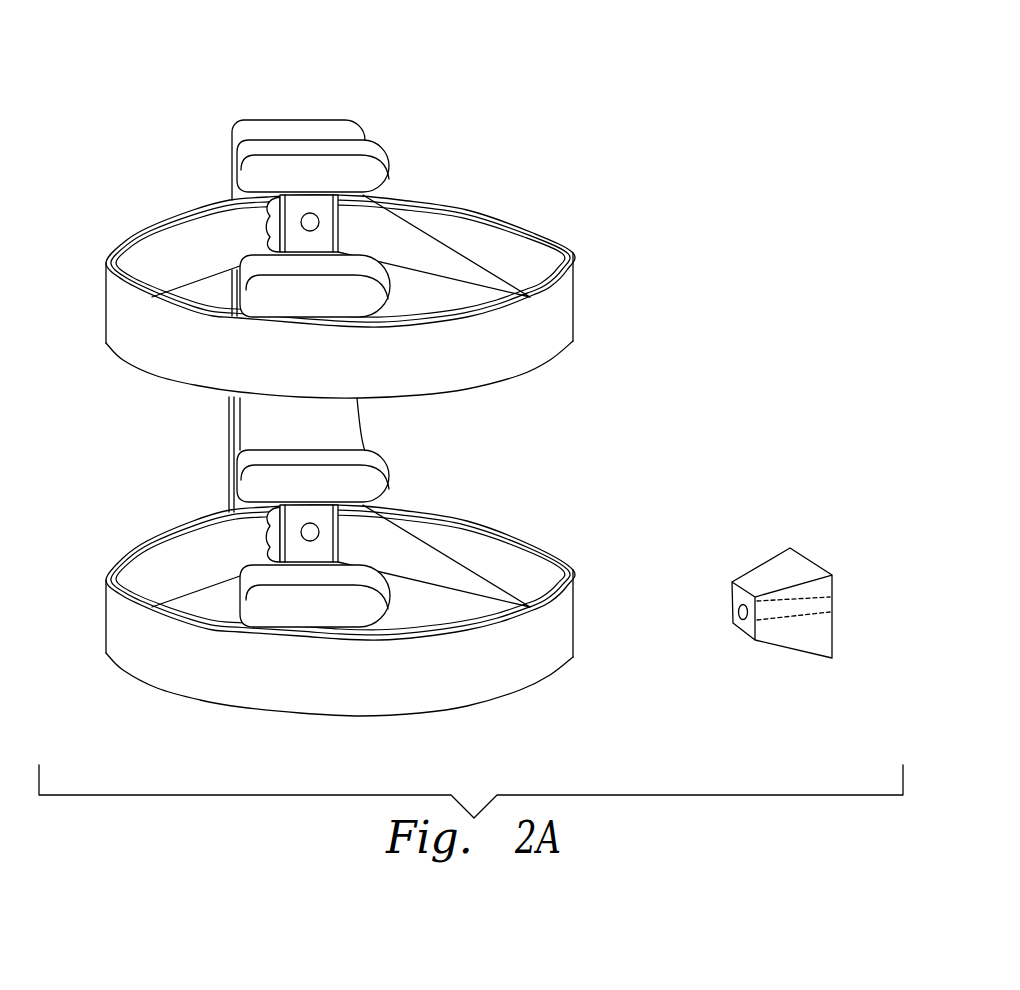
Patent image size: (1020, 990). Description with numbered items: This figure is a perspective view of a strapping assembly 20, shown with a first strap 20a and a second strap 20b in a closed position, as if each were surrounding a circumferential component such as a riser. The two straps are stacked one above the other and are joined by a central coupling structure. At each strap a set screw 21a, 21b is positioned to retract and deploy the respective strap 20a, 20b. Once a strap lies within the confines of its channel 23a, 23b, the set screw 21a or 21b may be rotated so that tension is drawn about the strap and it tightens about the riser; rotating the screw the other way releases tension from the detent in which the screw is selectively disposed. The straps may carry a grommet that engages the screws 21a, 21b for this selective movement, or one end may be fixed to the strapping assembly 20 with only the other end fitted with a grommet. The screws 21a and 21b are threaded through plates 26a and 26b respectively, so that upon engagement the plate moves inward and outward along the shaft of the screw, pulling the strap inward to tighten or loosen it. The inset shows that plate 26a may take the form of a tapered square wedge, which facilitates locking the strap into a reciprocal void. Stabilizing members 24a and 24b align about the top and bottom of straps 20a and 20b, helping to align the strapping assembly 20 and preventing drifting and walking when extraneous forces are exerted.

The strapping assembly 20 is at (548, 123).
The first strap 20a is at (573, 253).
The second strap 20b is at (577, 569).
The set screw 21a is at (320, 225).
The set screw 21b is at (320, 535).
The channel 23a is at (268, 224).
The channel 23b is at (268, 534).
The stabilizing member 24a is at (385, 293).
The stabilizing member 24b is at (385, 613).
The plate 26a is at (297, 207).
The plate 26b is at (293, 552).